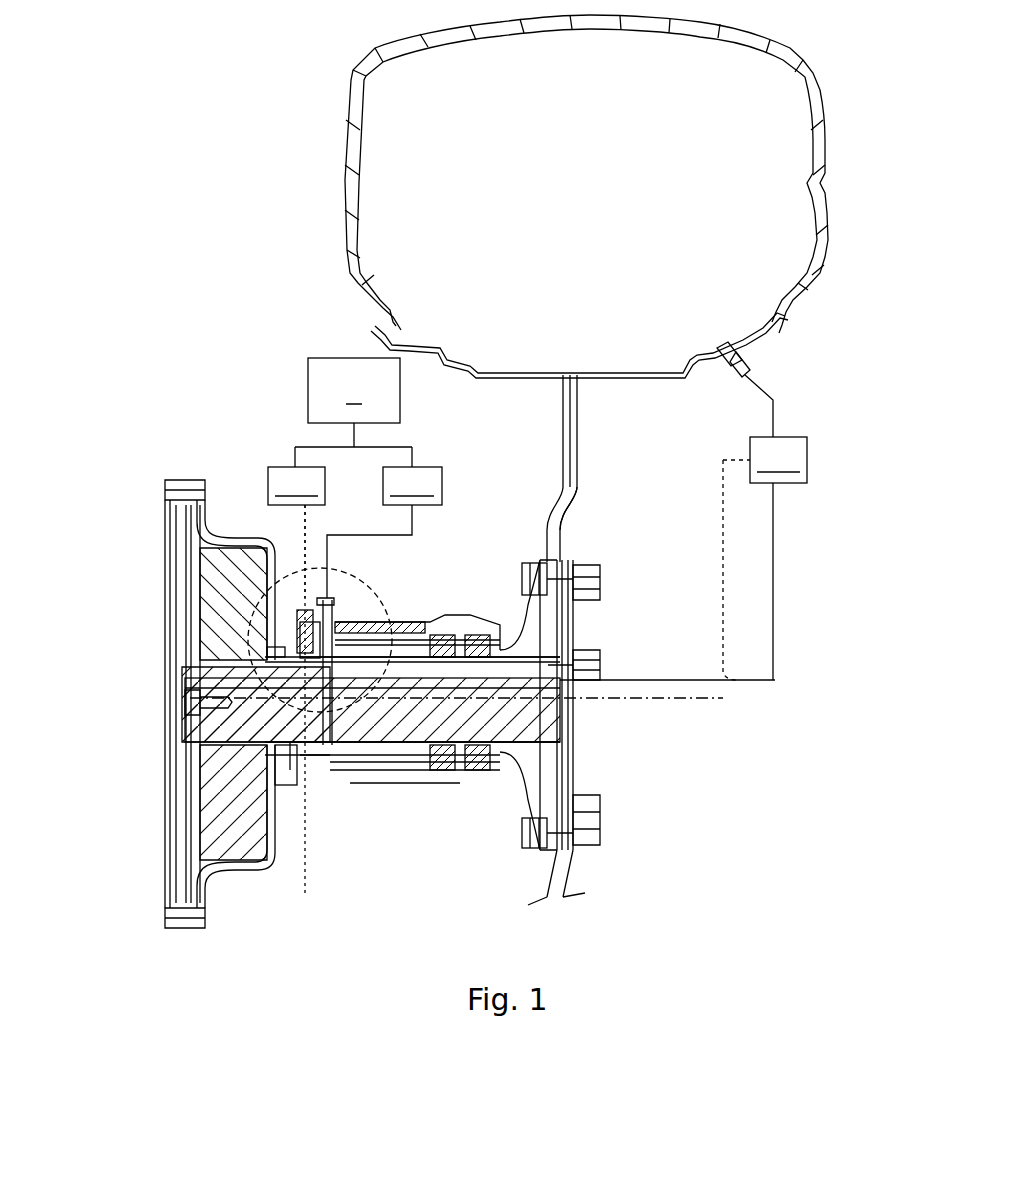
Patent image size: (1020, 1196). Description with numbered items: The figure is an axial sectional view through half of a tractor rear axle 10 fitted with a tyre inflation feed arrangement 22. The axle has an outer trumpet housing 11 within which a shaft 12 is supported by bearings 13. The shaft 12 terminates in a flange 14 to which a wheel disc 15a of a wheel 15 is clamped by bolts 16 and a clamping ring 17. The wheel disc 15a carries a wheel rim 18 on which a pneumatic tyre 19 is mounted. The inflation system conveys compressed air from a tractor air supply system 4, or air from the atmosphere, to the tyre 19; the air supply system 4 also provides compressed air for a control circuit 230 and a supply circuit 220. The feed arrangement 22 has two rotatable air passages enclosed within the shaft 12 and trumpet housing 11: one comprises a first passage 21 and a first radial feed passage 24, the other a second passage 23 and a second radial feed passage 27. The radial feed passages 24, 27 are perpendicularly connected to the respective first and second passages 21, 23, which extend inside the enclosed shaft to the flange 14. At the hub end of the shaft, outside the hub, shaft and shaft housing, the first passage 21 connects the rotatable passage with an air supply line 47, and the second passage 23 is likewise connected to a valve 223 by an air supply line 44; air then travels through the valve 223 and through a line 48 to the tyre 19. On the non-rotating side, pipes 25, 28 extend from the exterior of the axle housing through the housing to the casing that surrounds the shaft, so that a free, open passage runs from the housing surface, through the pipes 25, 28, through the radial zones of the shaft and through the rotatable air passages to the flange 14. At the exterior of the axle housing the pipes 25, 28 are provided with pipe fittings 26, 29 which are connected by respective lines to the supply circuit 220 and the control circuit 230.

The tractor air supply system 4 is at (353, 412).
The tractor rear axle 10 is at (290, 774).
The outer trumpet housing 11 is at (400, 765).
The shaft 12 is at (440, 775).
The bearings 13 is at (280, 630).
The flange 14 is at (560, 788).
The wheel 15 is at (537, 388).
The wheel disc 15a is at (580, 488).
The bolts 16 is at (572, 566).
The clamping ring 17 is at (576, 626).
The wheel rim 18 is at (592, 370).
The pneumatic tyre 19 is at (345, 182).
The first passage 21 is at (522, 665).
The tyre inflation feed arrangement 22 is at (340, 632).
The second passage 23 is at (435, 688).
The first radial feed passage 24 is at (345, 742).
The pipe 25 is at (350, 606).
The pipe fitting 26 is at (343, 612).
The second radial feed passage 27 is at (168, 555).
The pipe 28 is at (300, 622).
The pipe fitting 29 is at (326, 600).
The air supply line 44 is at (692, 699).
The air supply line 47 is at (660, 680).
The line 48 is at (765, 393).
The supply circuit 220 is at (384, 532).
The valve 223 is at (778, 558).
The control circuit 230 is at (296, 681).